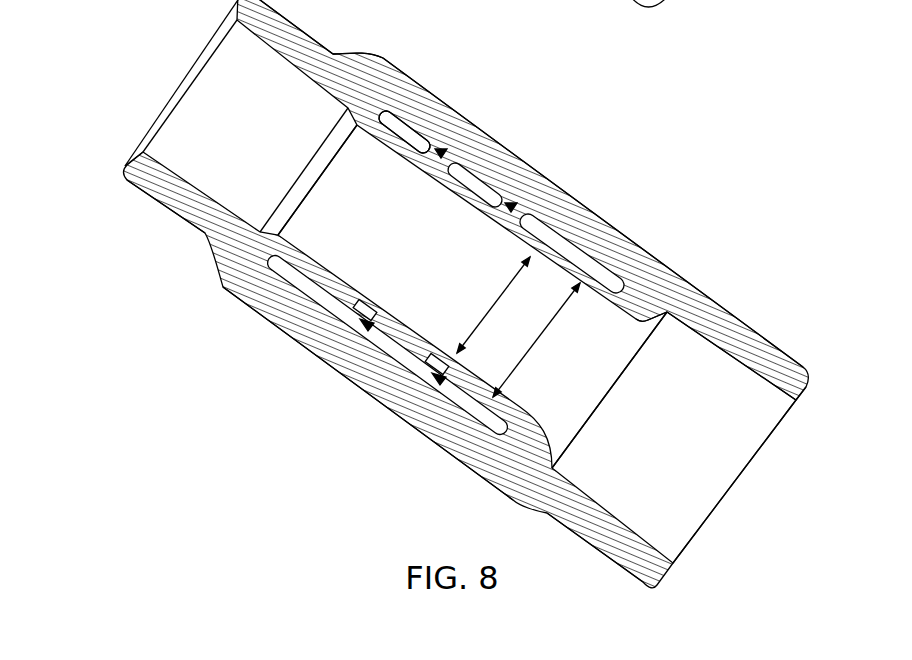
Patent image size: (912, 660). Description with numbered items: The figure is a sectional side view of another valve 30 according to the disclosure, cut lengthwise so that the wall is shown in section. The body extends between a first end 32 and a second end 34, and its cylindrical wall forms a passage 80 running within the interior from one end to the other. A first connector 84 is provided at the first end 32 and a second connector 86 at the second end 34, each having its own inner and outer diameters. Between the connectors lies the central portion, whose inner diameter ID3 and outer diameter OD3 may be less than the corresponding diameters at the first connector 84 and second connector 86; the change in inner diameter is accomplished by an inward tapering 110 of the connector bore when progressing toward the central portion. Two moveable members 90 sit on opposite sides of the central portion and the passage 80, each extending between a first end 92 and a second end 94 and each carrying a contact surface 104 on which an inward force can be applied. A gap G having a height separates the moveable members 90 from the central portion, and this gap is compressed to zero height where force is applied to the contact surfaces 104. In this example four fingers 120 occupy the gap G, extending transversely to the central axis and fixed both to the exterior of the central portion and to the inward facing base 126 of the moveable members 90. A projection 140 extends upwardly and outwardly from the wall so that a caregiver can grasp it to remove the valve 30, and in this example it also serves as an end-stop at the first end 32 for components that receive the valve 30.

In FIG. 8, the valve 30 is at (113, 452).
In FIG. 8, the first end 32 is at (90, 133).
In FIG. 8, the second end 34 is at (828, 431).
In FIG. 8, the passage 80 is at (744, 487).
In FIG. 7, the passage 80 is at (712, 0).
In FIG. 8, the first connector 84 is at (160, 229).
In FIG. 8, the second connector 86 is at (611, 578).
In FIG. 8, the moveable members 90 is at (648, 174).
In FIG. 8, the first end 92 is at (398, 56).
In FIG. 8, the second end 94 is at (698, 266).
In FIG. 8, the contact surface 104 is at (578, 193).
In FIG. 8, the inward tapering 110 is at (641, 323).
In FIG. 8, the fingers 120 is at (445, 150).
In FIG. 8, the inward facing base 126 is at (427, 110).
In FIG. 8, the projection 140 is at (367, 54).
In FIG. 8, the gap G is at (401, 134).
In FIG. 8, the inner diameter of the central portion ID3 is at (492, 306).
In FIG. 8, the outer diameter of the central portion OD3 is at (531, 348).